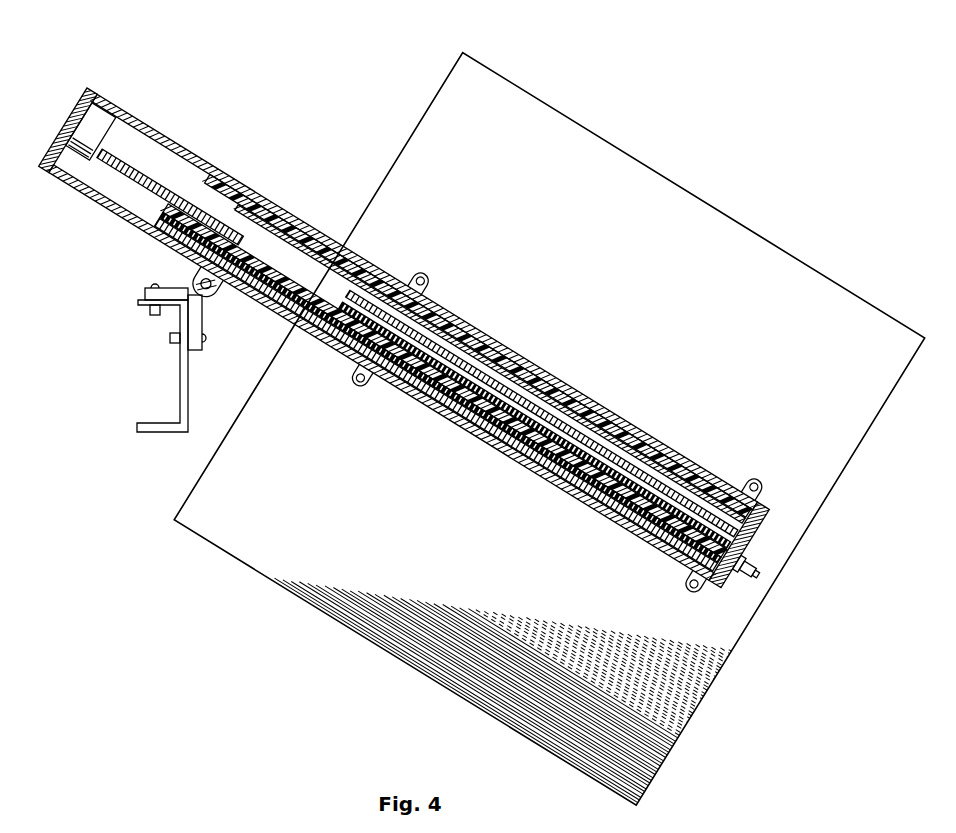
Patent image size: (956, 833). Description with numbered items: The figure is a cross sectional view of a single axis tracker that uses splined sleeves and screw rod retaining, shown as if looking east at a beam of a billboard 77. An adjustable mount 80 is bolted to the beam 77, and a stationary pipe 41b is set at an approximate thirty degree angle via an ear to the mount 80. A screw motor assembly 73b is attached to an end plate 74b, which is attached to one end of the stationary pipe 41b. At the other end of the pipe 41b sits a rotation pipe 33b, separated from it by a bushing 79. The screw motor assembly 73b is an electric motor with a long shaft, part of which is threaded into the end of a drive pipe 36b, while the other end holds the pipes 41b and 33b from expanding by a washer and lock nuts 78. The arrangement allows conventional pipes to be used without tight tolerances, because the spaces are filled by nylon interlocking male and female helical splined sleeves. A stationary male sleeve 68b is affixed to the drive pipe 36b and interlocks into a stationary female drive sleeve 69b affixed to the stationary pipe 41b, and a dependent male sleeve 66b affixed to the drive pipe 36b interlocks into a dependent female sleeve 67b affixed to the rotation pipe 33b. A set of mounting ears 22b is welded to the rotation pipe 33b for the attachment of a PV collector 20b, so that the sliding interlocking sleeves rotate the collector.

The PV collector 20b is at (243, 537).
The stationary pipe 41b is at (163, 140).
The end plate 74b is at (73, 112).
The screw motor assembly 73b is at (98, 132).
The stationary female drive sleeve 69b is at (213, 178).
The stationary male sleeve 68b is at (323, 260).
The rotation pipe 33b is at (497, 440).
The drive pipe 36b is at (432, 375).
The dependent female sleeve 67b is at (585, 410).
The dependent male sleeve 66b is at (723, 480).
The washer and lock nuts 78 is at (765, 547).
The bushing 79 is at (380, 282).
The mounting ears 22b is at (352, 373).
The adjustable mount 80 is at (195, 284).
The beam of a billboard 77 is at (182, 382).